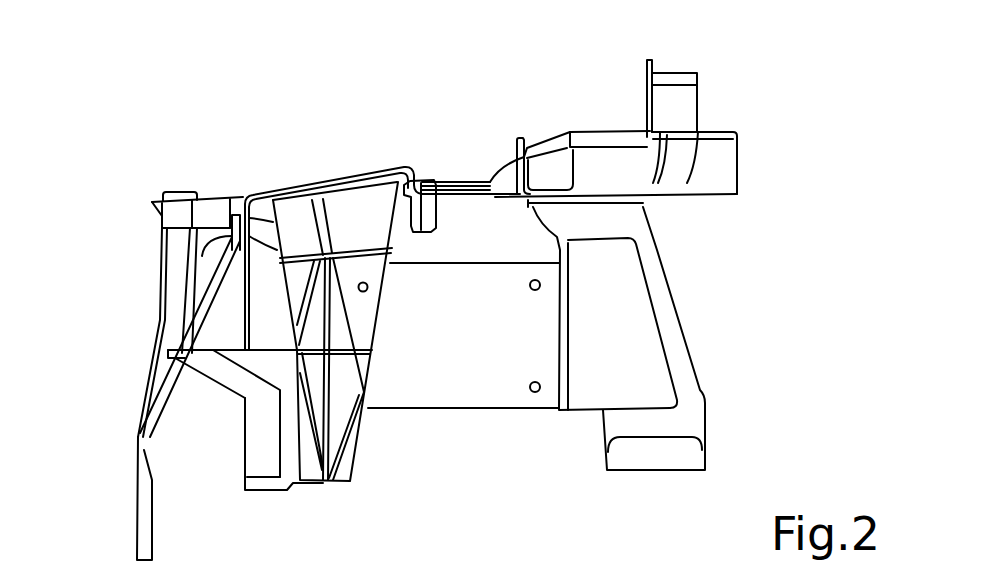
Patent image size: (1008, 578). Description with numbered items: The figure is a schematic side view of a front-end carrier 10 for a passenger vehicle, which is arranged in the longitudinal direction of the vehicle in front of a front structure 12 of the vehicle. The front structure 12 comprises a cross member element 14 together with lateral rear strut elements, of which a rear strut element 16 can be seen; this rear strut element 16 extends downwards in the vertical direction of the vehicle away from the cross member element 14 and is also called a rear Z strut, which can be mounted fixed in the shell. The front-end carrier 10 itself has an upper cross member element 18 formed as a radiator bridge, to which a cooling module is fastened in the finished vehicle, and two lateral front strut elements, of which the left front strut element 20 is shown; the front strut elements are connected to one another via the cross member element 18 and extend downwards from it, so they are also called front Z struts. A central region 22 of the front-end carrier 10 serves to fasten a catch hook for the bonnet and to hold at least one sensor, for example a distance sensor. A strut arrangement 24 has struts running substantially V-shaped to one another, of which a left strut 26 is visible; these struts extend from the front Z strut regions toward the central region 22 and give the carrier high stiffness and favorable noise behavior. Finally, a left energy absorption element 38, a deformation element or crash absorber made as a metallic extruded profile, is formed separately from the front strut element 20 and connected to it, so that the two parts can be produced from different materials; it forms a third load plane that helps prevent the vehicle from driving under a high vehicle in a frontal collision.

The front-end carrier 10 is at (357, 155).
The front structure 12 is at (712, 102).
The cross member element 14 is at (630, 165).
The rear strut element 16 is at (640, 313).
The cross member element 18 is at (282, 180).
The front strut element 20 is at (265, 457).
The central region 22 is at (172, 308).
The strut arrangement 24 is at (212, 258).
The left strut 26 is at (179, 400).
The energy absorption element 38 is at (463, 388).